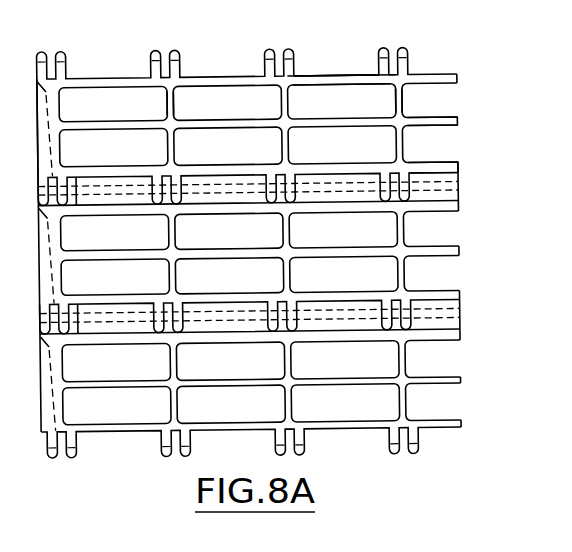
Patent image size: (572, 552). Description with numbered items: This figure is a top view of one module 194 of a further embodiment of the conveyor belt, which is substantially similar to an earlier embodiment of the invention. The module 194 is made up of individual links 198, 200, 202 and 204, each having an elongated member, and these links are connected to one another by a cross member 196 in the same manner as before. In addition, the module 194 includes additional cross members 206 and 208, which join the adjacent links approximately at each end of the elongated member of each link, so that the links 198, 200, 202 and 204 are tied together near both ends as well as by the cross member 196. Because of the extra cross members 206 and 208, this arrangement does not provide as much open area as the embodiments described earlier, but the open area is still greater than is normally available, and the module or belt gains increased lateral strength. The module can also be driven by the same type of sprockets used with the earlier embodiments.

The module 194 is at (433, 73).
The cross member 196 is at (438, 120).
The link 198 is at (395, 90).
The link 200 is at (302, 88).
The link 202 is at (168, 98).
The link 204 is at (55, 98).
The cross member 206 is at (337, 75).
The cross member 208 is at (445, 160).